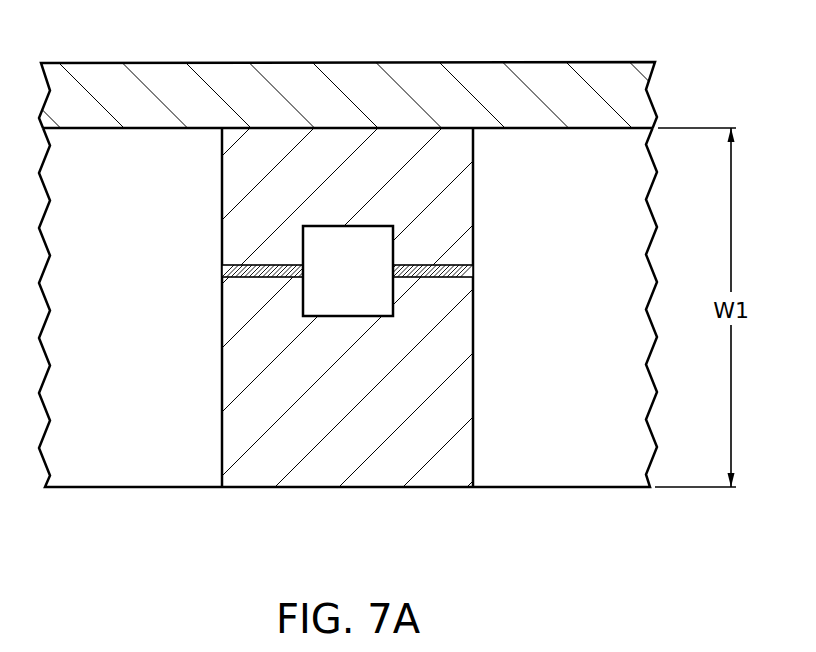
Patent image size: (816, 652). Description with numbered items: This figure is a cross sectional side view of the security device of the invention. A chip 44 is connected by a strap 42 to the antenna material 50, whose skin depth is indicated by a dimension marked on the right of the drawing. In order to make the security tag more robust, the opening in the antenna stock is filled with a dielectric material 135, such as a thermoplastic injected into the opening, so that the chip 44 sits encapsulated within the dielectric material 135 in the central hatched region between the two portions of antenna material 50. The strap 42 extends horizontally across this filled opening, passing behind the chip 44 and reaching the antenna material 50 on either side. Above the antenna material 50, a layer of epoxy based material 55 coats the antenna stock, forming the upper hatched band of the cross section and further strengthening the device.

The epoxy based material 55 is at (537, 72).
The antenna material 50 is at (127, 472).
The dielectric material 135 is at (333, 472).
The strap 42 is at (468, 269).
The chip 44 is at (316, 251).